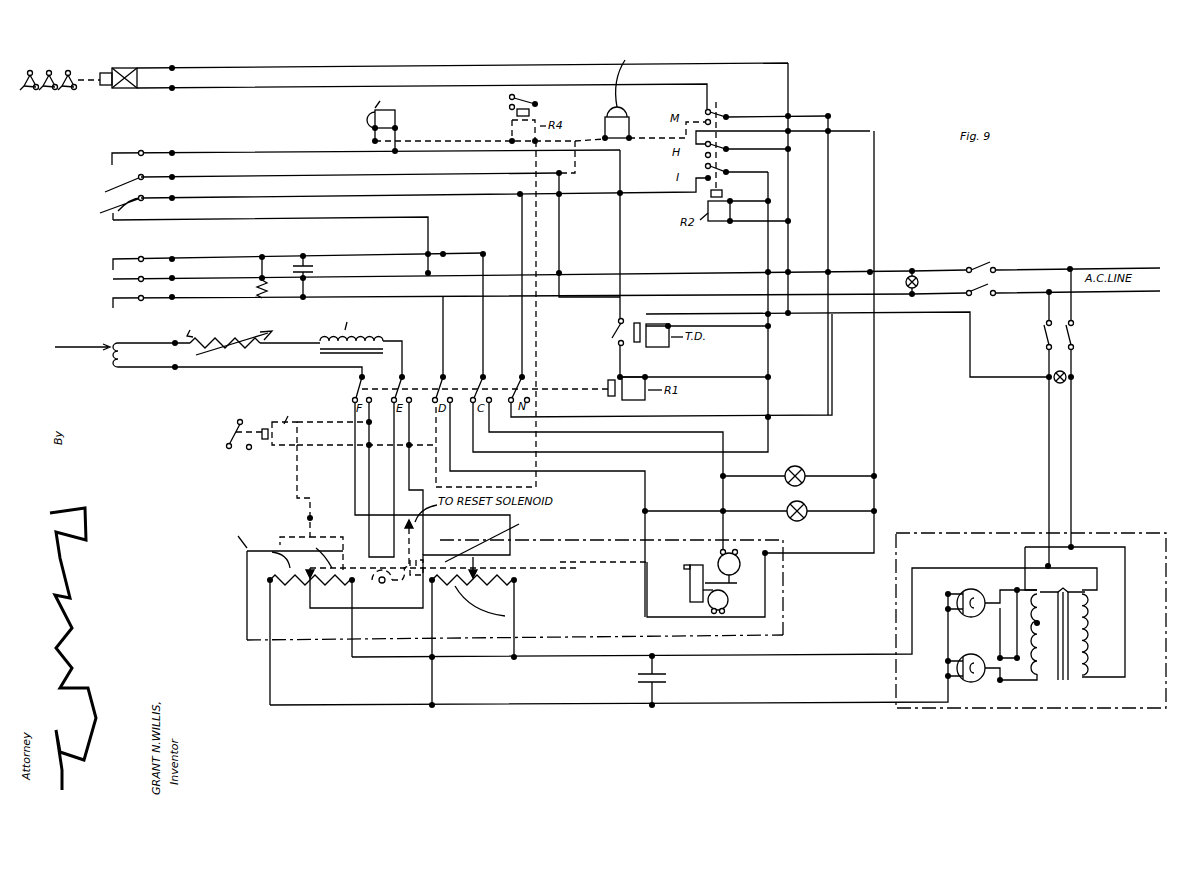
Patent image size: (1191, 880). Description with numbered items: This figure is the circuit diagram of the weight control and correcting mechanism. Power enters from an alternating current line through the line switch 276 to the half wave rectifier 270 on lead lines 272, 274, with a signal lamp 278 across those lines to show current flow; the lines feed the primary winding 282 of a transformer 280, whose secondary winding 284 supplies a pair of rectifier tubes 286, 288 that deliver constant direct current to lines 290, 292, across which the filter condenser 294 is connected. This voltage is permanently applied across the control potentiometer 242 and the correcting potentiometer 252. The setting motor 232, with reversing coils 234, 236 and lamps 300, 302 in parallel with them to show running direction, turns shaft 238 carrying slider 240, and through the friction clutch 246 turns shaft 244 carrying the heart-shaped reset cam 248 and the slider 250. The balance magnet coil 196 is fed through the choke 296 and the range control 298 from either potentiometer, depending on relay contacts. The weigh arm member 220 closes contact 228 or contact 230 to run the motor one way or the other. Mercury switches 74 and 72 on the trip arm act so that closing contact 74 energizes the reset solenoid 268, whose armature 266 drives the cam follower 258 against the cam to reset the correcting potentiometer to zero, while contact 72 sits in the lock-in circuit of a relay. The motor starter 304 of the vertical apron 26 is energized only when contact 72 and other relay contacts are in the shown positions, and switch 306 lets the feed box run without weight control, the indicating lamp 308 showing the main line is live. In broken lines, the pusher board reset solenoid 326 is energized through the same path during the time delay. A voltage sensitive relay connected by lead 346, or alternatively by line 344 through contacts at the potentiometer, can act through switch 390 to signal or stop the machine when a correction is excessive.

The motor starter 304 is at (118, 36).
The vertical apron 26 is at (56, 90).
The mercury switch 74 is at (108, 158).
The mercury switch 72 is at (110, 218).
The contact 228 is at (108, 266).
The member 220 is at (108, 277).
The contact 230 is at (108, 295).
The balance magnet coil 196 is at (115, 365).
The range control 298 is at (226, 337).
The choke 296 is at (341, 335).
The reset solenoid 268 is at (397, 118).
The pusher board reset solenoid 326 is at (630, 114).
The switch 390 is at (220, 441).
The lead 346 is at (300, 446).
The line 344 is at (295, 482).
The armature 266 is at (408, 522).
The slider 250 is at (240, 550).
The correcting potentiometer 252 is at (262, 579).
The cam follower 258 is at (312, 588).
The reset cam 248 is at (385, 584).
The shaft 244 is at (432, 590).
The friction clutch 246 is at (436, 553).
The slider 240 is at (515, 557).
The control potentiometer 242 is at (516, 580).
The shaft 238 is at (612, 566).
The setting motor 232 is at (690, 597).
The reversing coil 234 is at (740, 552).
The reversing coil 236 is at (728, 607).
The lamp 300 is at (803, 468).
The lamp 302 is at (806, 504).
The line 290 is at (855, 645).
The line 292 is at (855, 700).
The filter condenser 294 is at (636, 676).
The indicating lamp 308 is at (920, 256).
The switch 306 is at (990, 264).
The line switch 276 is at (1076, 333).
The signal lamp 278 is at (1068, 374).
The lead line 272 is at (1076, 416).
The lead line 274 is at (1046, 460).
The half wave rectifier 270 is at (1166, 524).
The transformer 280 is at (1066, 586).
The primary winding 282 is at (1088, 630).
The secondary winding 284 is at (1030, 678).
The rectifier tube 286 is at (968, 590).
The rectifier tube 288 is at (968, 684).